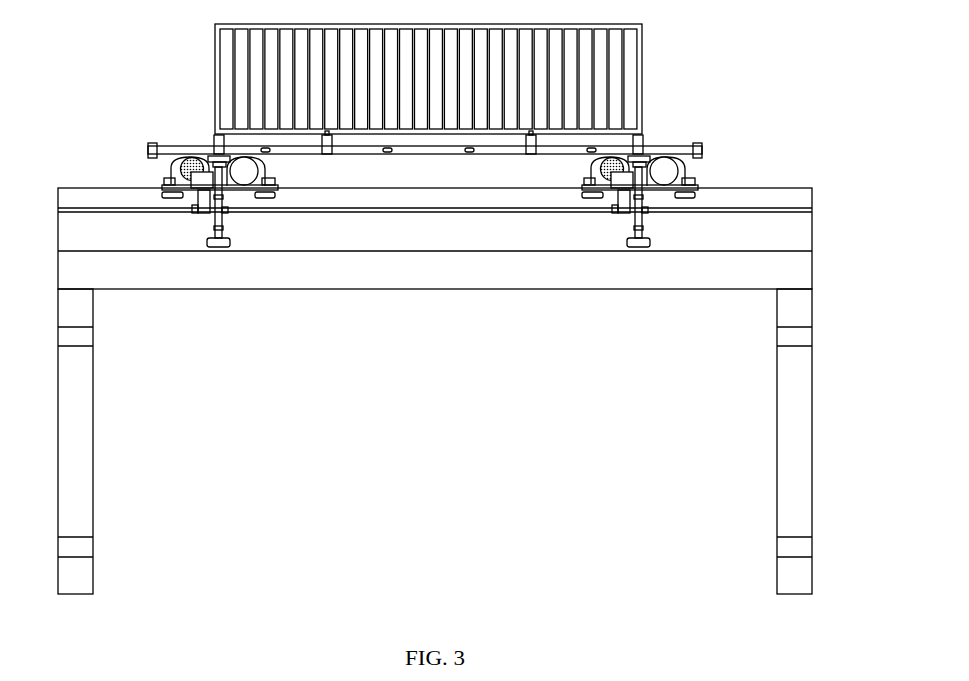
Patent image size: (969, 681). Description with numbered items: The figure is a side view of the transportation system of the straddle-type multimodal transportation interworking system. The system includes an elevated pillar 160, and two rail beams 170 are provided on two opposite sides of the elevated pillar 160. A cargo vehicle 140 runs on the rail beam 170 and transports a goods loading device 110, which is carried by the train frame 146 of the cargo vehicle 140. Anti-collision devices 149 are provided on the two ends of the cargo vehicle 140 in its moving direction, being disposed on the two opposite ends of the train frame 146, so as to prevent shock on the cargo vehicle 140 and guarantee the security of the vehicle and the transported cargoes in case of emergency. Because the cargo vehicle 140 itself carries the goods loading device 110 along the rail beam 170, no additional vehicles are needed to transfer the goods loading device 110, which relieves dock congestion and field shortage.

The goods loading device 110 is at (278, 92).
The train frame 146 is at (190, 152).
The anti-collision device 149 is at (150, 147).
The cargo vehicle 140 is at (430, 270).
The rail beam 170 is at (129, 200).
The elevated pillar 160 is at (80, 266).